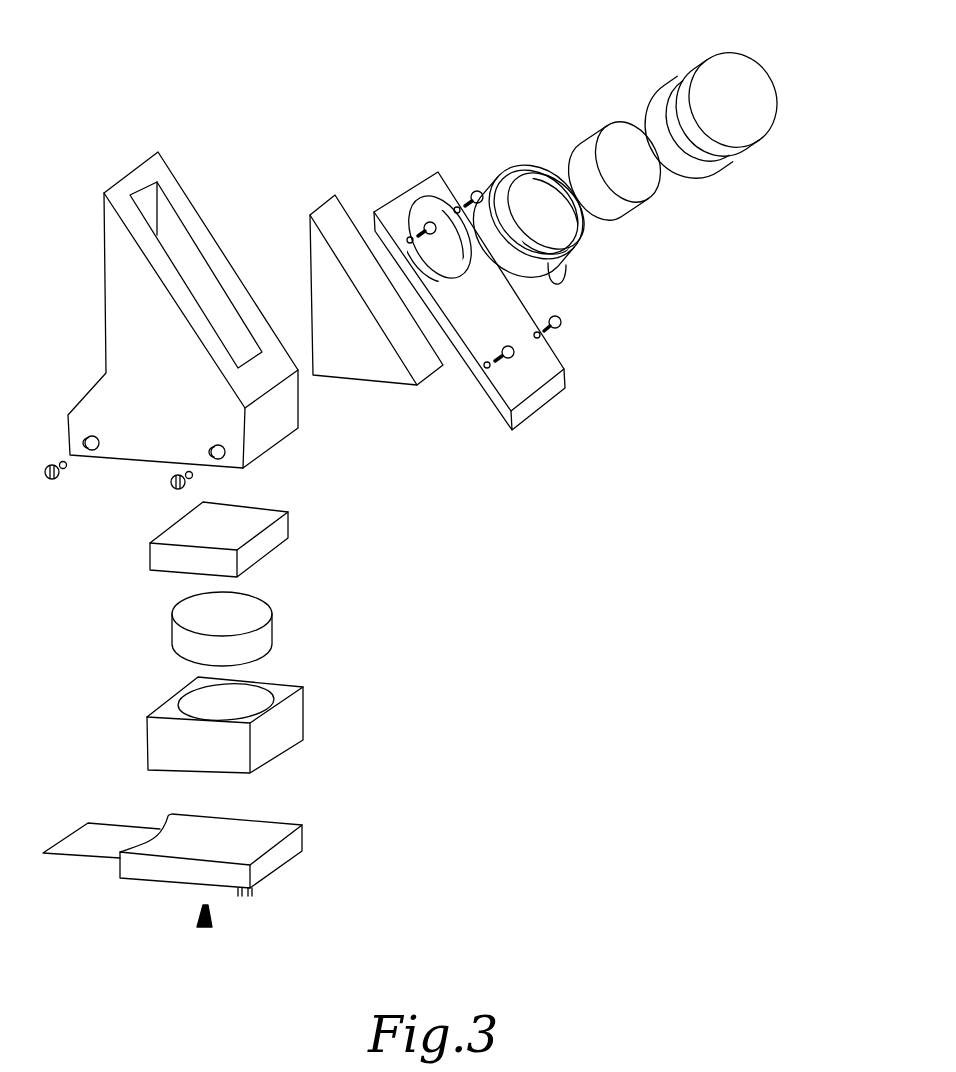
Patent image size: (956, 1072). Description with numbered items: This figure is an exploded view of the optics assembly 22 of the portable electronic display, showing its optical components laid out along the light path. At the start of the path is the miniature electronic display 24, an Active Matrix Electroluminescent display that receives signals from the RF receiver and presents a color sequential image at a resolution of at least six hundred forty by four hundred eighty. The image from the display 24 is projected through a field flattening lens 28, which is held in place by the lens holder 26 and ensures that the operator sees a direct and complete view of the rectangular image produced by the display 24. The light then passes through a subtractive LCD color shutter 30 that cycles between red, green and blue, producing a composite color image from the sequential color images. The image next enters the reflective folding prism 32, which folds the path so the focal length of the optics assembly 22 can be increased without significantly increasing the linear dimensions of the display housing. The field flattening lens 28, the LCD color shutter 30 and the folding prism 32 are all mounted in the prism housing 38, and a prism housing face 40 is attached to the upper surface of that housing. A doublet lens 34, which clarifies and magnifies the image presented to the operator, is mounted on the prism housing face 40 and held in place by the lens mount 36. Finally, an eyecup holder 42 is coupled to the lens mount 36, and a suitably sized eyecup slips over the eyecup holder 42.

The optics assembly 22 is at (790, 393).
The miniature electronic display 24 is at (307, 833).
The lens holder 26 is at (305, 715).
The field flattening lens 28 is at (273, 633).
The subtractive LCD color shutter 30 is at (289, 520).
The reflective folding prism 32 is at (323, 192).
The doublet lens 34 is at (637, 213).
The lens mount 36 is at (520, 167).
The prism housing 38 is at (140, 170).
The prism housing face 40 is at (427, 170).
The eyecup holder 42 is at (733, 53).